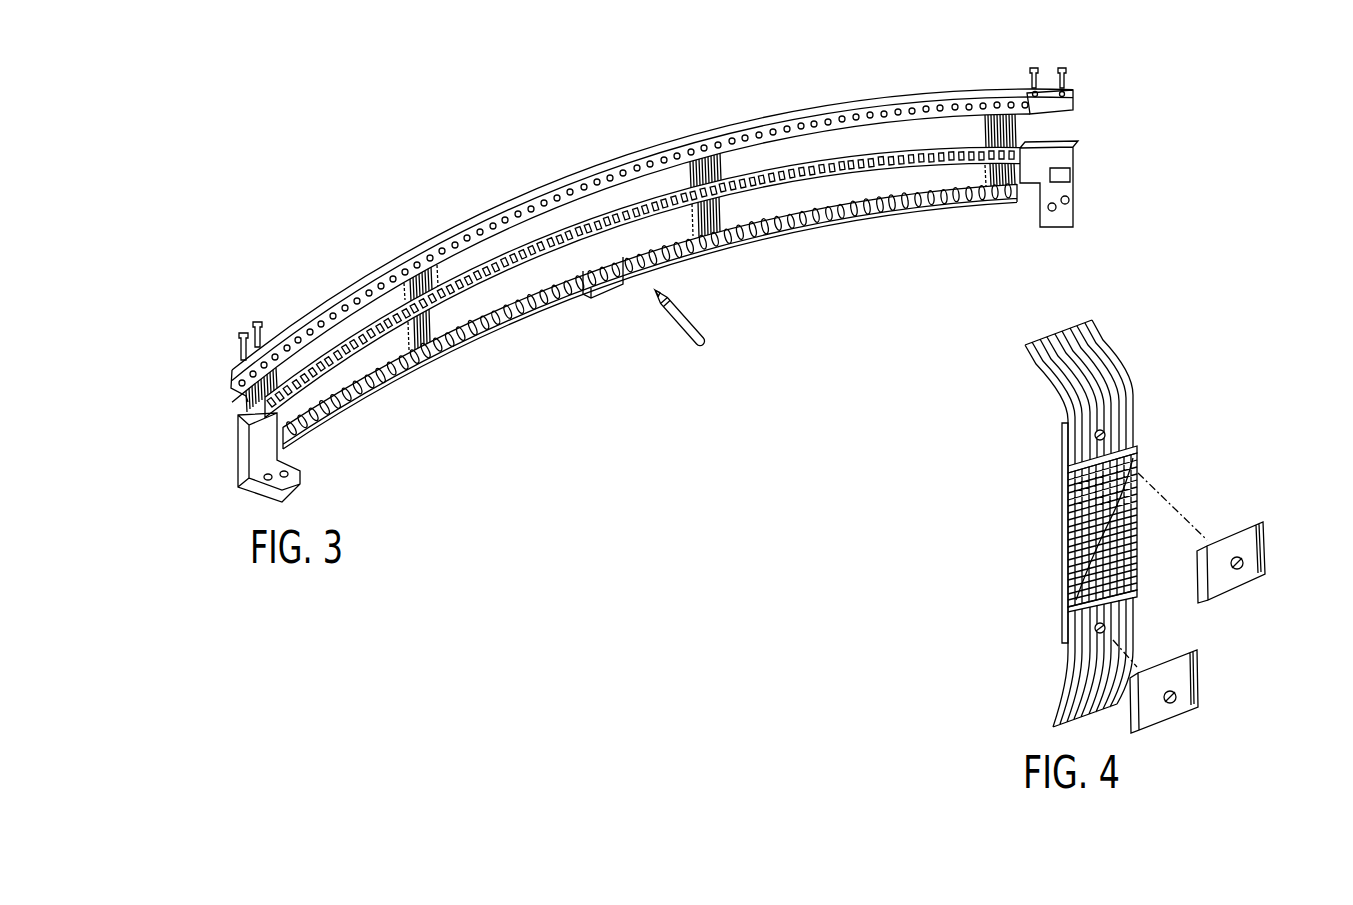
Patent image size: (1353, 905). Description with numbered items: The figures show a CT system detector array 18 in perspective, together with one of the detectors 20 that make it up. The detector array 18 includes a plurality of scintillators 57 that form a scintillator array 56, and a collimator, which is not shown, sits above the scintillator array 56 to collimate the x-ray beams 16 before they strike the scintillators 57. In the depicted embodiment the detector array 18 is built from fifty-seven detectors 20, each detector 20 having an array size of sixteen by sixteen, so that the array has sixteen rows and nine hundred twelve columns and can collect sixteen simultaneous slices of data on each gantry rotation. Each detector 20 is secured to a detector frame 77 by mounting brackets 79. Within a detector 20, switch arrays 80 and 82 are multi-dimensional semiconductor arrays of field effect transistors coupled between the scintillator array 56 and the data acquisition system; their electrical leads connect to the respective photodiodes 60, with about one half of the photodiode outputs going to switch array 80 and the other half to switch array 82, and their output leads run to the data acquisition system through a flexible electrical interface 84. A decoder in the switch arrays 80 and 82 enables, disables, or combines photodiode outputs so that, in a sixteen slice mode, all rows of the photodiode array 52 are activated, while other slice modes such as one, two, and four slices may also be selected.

In FIG. 3, the x-ray beams 16 is at (680, 329).
In FIG. 3, the detector array 18 is at (546, 174).
In FIG. 3, the detector 20 is at (411, 270).
In FIG. 4, the detector 20 is at (1213, 376).
In FIG. 3, the photodiode array 52 is at (1031, 139).
In FIG. 4, the photodiode array 52 is at (1061, 597).
In FIG. 3, the scintillator array 56 is at (928, 174).
In FIG. 4, the scintillator array 56 is at (1097, 530).
In FIG. 4, the scintillator 57 is at (1136, 573).
In FIG. 4, the photodiode 60 is at (1071, 533).
In FIG. 3, the detector frame 77 is at (263, 411).
In FIG. 4, the mounting bracket 79 is at (1251, 536).
In FIG. 4, the switch array 80 is at (1068, 470).
In FIG. 4, the switch array 82 is at (1136, 599).
In FIG. 4, the flexible electrical interface 84 is at (1119, 374).